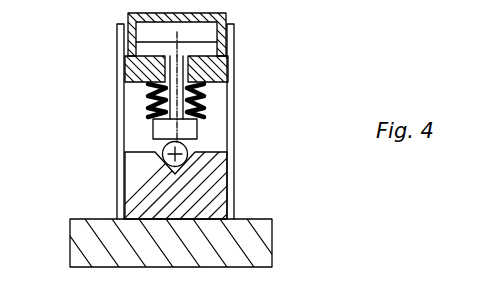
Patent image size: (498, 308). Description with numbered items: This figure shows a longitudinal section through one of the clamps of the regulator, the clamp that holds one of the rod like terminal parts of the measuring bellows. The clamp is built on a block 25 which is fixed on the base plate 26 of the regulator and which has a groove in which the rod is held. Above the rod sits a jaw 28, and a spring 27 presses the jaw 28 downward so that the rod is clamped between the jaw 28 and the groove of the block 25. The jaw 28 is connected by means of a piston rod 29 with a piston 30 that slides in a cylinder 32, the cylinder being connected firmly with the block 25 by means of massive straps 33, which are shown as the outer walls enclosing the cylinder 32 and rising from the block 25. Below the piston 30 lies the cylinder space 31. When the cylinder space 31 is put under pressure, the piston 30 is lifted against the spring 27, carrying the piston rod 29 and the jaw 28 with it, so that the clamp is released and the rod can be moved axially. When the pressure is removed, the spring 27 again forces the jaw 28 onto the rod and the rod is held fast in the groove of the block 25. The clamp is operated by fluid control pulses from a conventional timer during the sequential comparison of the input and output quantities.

The block 25 is at (148, 178).
The base plate 26 is at (115, 240).
The spring 27 is at (203, 91).
The jaw 28 is at (197, 128).
The piston rod 29 is at (178, 70).
The piston 30 is at (197, 52).
The cylinder space 31 is at (160, 61).
The cylinder 32 is at (134, 22).
The cylinder 33 is at (122, 102).